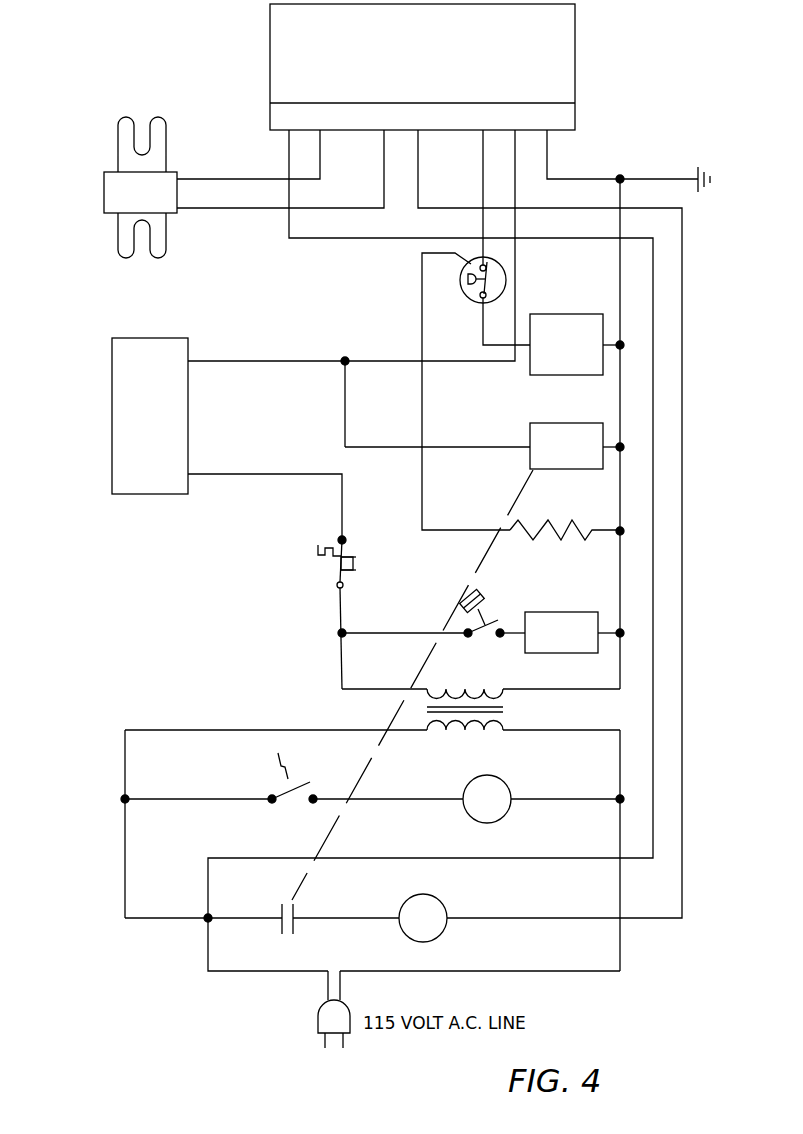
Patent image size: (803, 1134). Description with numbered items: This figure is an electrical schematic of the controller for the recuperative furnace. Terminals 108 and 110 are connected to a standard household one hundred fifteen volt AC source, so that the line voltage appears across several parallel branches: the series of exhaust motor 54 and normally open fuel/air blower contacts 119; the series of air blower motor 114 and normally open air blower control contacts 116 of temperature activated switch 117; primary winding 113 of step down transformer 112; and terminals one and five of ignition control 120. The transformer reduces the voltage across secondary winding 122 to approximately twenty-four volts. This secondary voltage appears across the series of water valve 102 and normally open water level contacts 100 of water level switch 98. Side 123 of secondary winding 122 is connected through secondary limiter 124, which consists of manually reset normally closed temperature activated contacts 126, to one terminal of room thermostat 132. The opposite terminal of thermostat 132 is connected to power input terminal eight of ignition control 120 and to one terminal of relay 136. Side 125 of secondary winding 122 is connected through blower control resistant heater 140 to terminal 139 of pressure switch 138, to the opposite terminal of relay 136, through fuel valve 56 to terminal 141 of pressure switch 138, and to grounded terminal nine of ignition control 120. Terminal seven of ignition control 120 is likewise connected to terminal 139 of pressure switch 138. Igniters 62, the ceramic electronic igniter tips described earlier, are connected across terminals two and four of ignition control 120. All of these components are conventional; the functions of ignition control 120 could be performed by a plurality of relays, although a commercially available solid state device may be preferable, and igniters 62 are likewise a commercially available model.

The ignition control 120 is at (576, 72).
The igniters 62 is at (104, 189).
The terminal of pressure switch 139 is at (479, 270).
The pressure switch 138 is at (467, 293).
The terminal of pressure switch 141 is at (479, 299).
The fuel valve 56 is at (552, 314).
The relay 136 is at (550, 423).
The blower control resistant heater 140 is at (545, 526).
The room thermostat 132 is at (138, 338).
The secondary limiter 124 is at (318, 552).
The temperature activated contacts 126 is at (336, 585).
The water level switch 98 is at (484, 590).
The water level contacts 100 is at (502, 622).
The water valve 102 is at (565, 612).
The side of secondary winding 123 is at (429, 684).
The secondary winding 122 is at (469, 679).
The side of secondary winding 125 is at (500, 684).
The step down transformer 112 is at (372, 709).
The primary winding 113 is at (473, 736).
The temperature activated switch 117 is at (295, 764).
The air blower control contacts 116 is at (313, 804).
The air blower motor 114 is at (508, 789).
The terminal 108 is at (207, 945).
The fuel/air blower contacts 119 is at (291, 935).
The exhaust motor 54 is at (445, 898).
The terminal 110 is at (620, 948).